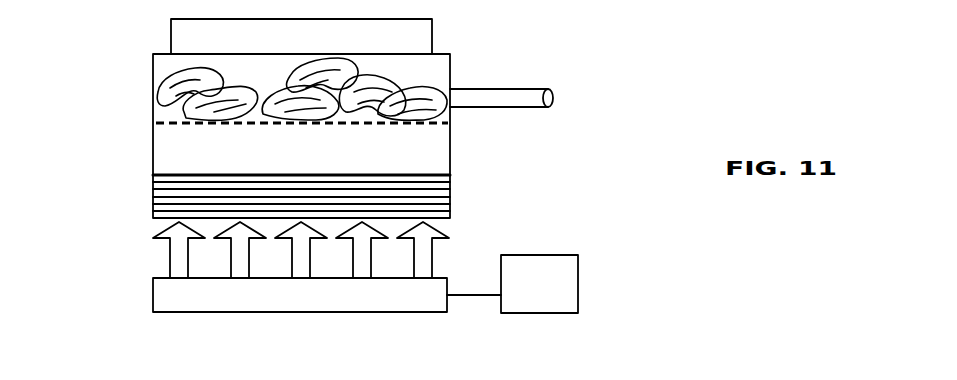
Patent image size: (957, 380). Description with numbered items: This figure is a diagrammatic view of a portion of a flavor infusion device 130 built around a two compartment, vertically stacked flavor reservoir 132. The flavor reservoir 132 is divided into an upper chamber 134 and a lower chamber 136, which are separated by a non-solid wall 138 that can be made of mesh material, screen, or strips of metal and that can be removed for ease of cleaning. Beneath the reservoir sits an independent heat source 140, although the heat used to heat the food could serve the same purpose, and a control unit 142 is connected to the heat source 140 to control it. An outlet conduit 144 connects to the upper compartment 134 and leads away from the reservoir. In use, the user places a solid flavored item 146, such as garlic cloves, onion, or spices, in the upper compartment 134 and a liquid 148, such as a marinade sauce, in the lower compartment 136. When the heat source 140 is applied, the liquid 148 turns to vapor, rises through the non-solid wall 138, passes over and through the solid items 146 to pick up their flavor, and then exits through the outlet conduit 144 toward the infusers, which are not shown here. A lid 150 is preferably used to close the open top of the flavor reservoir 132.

The heating apparatus 130 is at (594, 116).
The flavor reservoir 132 is at (100, 166).
The upper chamber 134 is at (450, 72).
The lower chamber 136 is at (433, 159).
The non-solid wall 138 is at (155, 143).
The heat source 140 is at (250, 296).
The control unit 142 is at (572, 278).
The outlet conduit 144 is at (535, 89).
The solid flavored item 146 is at (160, 88).
The liquid 148 is at (445, 200).
The lid 150 is at (432, 40).